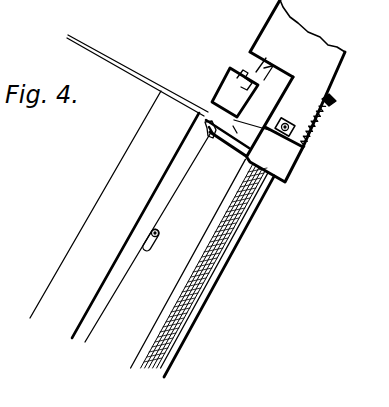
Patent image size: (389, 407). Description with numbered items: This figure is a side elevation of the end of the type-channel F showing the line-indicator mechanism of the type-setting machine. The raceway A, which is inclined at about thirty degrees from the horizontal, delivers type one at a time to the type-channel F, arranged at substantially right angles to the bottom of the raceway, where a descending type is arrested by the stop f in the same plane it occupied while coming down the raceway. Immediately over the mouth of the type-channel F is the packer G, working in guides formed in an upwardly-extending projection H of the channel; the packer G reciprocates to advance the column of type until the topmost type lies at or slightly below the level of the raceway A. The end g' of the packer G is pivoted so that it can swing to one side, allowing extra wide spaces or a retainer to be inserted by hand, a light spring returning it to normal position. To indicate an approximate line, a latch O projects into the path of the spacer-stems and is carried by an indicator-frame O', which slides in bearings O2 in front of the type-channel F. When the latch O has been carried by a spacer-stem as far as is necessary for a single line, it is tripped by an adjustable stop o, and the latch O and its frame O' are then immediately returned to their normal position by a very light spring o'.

The upwardly-extending projection of the channel H is at (297, 73).
The indicator-frame O' is at (263, 129).
The spring o' is at (319, 120).
The stop f is at (236, 130).
The end of the packer g' is at (232, 92).
The packer G is at (252, 72).
The raceway A is at (134, 70).
The latch O is at (192, 126).
The type-channel F is at (74, 240).
The adjustable stop o is at (160, 236).
The bearings O2 is at (212, 263).